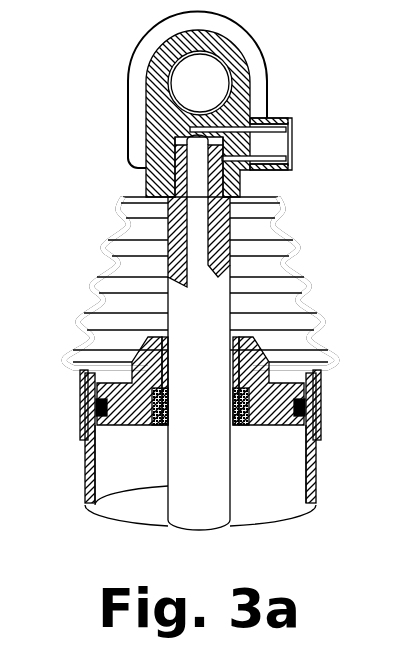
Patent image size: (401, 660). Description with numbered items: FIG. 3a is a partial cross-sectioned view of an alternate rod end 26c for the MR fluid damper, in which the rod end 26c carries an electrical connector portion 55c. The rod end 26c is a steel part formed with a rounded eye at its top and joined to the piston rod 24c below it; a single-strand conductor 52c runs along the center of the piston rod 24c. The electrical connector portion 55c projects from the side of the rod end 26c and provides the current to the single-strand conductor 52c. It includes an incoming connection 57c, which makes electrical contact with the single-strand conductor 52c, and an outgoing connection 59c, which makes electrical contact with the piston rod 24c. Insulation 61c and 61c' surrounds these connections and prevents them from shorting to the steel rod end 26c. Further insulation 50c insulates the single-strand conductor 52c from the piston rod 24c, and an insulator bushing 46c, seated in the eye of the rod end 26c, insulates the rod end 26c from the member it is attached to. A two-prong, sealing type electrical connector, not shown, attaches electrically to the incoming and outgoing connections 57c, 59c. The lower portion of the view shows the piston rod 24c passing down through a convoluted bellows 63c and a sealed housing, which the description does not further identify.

The rod end 26c is at (270, 42).
The insulator bushing 46c is at (165, 44).
The single-strand conductor 52c is at (160, 126).
The insulation 50c is at (150, 173).
The electrical connector portion 55c is at (300, 114).
The incoming connection 57c is at (295, 128).
The outgoing connection 59c is at (295, 160).
The insulation 61c is at (325, 84).
The insulation 61c' is at (325, 202).
The piston rod 24c is at (222, 362).
The bellows 63c is at (232, 318).